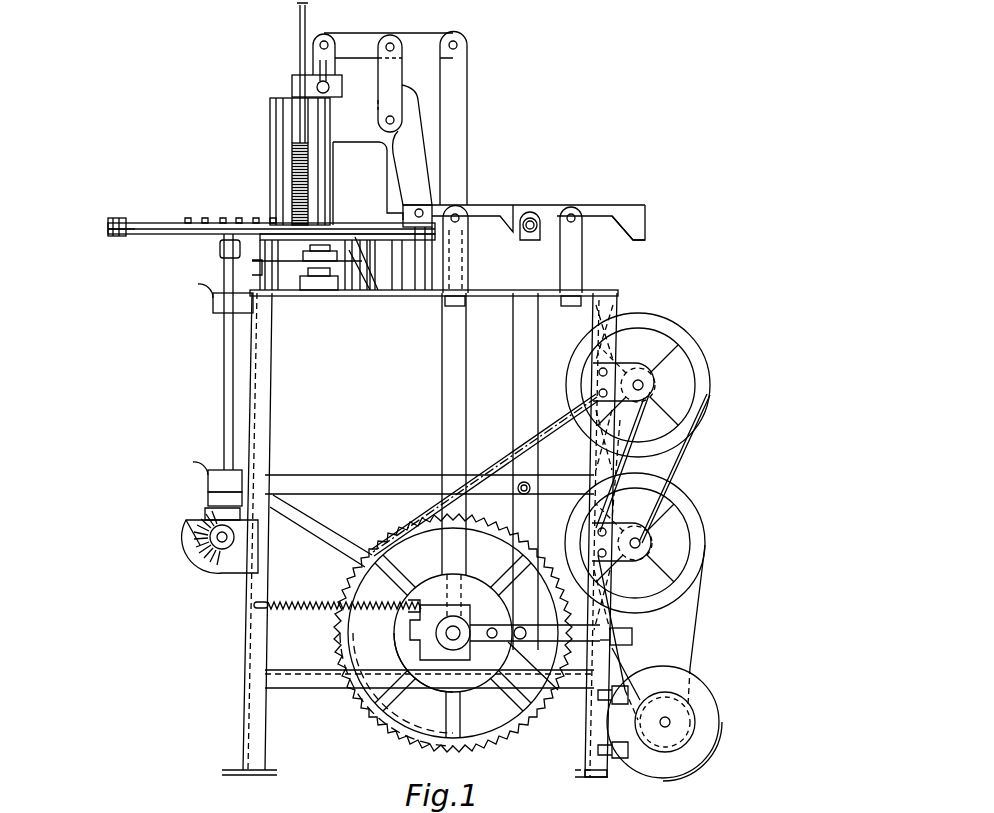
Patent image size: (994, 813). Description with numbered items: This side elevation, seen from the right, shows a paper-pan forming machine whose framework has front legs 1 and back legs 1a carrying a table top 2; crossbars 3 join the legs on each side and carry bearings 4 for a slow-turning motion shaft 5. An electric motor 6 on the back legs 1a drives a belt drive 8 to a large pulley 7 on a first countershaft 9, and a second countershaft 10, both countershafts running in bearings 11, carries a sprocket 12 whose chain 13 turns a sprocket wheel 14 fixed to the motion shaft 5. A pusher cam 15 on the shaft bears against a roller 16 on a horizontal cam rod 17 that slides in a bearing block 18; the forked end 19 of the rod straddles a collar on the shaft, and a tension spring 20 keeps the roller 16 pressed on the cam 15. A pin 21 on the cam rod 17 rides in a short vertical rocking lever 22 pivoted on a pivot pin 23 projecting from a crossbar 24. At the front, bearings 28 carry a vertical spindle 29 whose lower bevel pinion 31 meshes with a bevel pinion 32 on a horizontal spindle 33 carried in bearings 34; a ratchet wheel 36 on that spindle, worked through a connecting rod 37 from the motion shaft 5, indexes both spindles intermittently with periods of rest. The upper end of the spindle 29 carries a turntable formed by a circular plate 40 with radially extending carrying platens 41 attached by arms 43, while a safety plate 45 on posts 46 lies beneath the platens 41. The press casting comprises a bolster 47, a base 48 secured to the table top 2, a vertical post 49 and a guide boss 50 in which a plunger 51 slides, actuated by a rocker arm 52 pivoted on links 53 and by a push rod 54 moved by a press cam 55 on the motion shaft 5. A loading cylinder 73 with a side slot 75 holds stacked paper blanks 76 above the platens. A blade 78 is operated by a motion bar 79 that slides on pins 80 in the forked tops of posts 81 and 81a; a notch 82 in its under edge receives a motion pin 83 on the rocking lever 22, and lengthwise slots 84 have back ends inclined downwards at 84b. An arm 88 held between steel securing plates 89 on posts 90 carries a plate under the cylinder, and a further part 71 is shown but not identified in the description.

The front legs 1 is at (240, 735).
The back legs 1a is at (608, 772).
The table top 2 is at (618, 292).
The crossbars 3 is at (300, 688).
The bearings 4 is at (420, 628).
The motion shaft 5 is at (368, 700).
The electric motor 6 is at (720, 700).
The large pulley 7 is at (690, 498).
The belt drive 8 is at (698, 618).
The first countershaft 9 is at (700, 535).
The second countershaft 10 is at (660, 378).
The bearings 11 is at (650, 378).
The sprocket 12 is at (650, 388).
The chain 13 is at (500, 455).
The sprocket wheel 14 is at (352, 725).
The pusher cam 15 is at (432, 585).
The roller 16 is at (590, 645).
The cam rod 17 is at (633, 636).
The bearing block 18 is at (612, 645).
The forked end 19 is at (456, 590).
The tension spring 20 is at (345, 603).
The pin 21 is at (508, 642).
The rocking lever 22 is at (490, 471).
The pivot pin 23 is at (530, 485).
The crossbar 24 is at (350, 475).
The bearings 28 is at (212, 300).
The vertical spindle 29 is at (225, 380).
The bevel pinion 31 is at (208, 500).
The bevel pinion 32 is at (195, 530).
The horizontal spindle 33 is at (205, 560).
The bearings 34 is at (222, 552).
The ratchet wheel 36 is at (200, 545).
The connecting rod 37 is at (310, 525).
The circular plate 40 is at (195, 222).
The carrying platens 41 is at (140, 225).
The arms 43 is at (175, 232).
The plate 45 is at (120, 232).
The posts 46 is at (270, 270).
The bolster 47 is at (322, 265).
The base 48 is at (228, 250).
The vertical post 49 is at (393, 186).
The guide boss 50 is at (330, 85).
The plunger 51 is at (330, 40).
The rocker arm 52 is at (432, 46).
The links 53 is at (408, 80).
The push rod 54 is at (467, 80).
The press cam 55 is at (425, 705).
The piston rod 71 is at (298, 75).
The cylinder 73 is at (272, 125).
The slot 75 is at (292, 110).
The paper blanks 76 is at (298, 170).
The blade 78 is at (362, 235).
The motion bar 79 is at (562, 208).
The pins 80 is at (578, 212).
The post 81 is at (584, 262).
The post 81a is at (455, 272).
The notch 82 is at (528, 233).
The motion pin 83 is at (530, 218).
The lengthwise slots 84 is at (483, 210).
The inclined downward ends 84b is at (647, 232).
The arm 88 is at (340, 265).
The steel securing plates 89 is at (364, 258).
The posts 90 is at (382, 270).